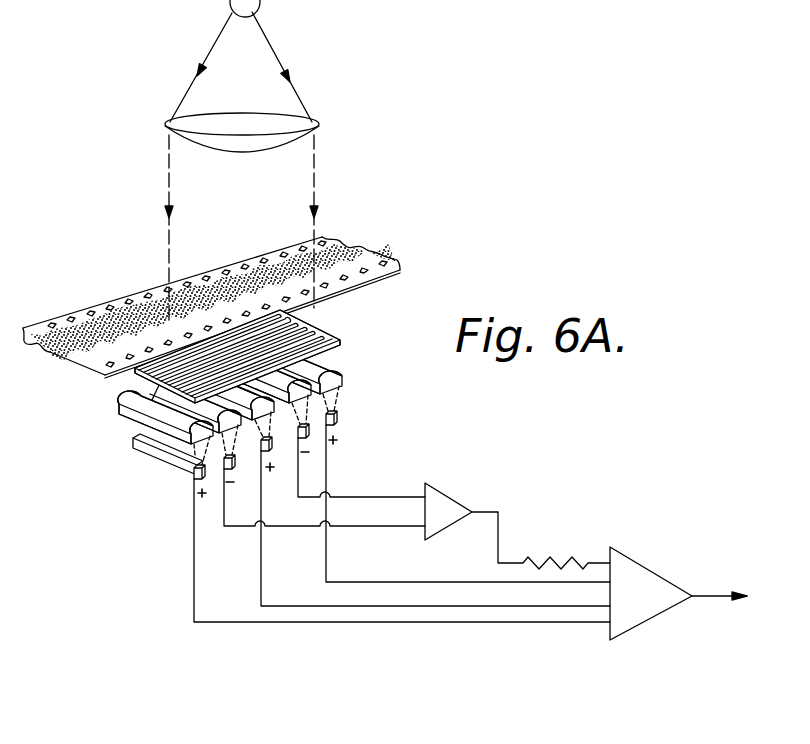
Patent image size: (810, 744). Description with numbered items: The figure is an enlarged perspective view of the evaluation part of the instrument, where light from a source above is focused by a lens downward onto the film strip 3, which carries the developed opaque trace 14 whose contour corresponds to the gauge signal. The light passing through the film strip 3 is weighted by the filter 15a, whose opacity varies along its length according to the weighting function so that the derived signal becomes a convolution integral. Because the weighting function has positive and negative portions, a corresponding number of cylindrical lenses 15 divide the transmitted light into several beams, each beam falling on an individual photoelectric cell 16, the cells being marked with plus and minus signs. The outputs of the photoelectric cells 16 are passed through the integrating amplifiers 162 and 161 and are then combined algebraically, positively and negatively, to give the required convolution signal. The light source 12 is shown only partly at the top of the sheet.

The light source 12 is at (260, 10).
The film strip 3 is at (401, 264).
The opaque trace 14 is at (64, 352).
The filter 15a is at (331, 328).
The cylindrical lenses 15 is at (344, 381).
The photoelectric cells 16 is at (191, 478).
The integrating amplifier 162 is at (430, 503).
The integrating amplifier 161 is at (627, 565).